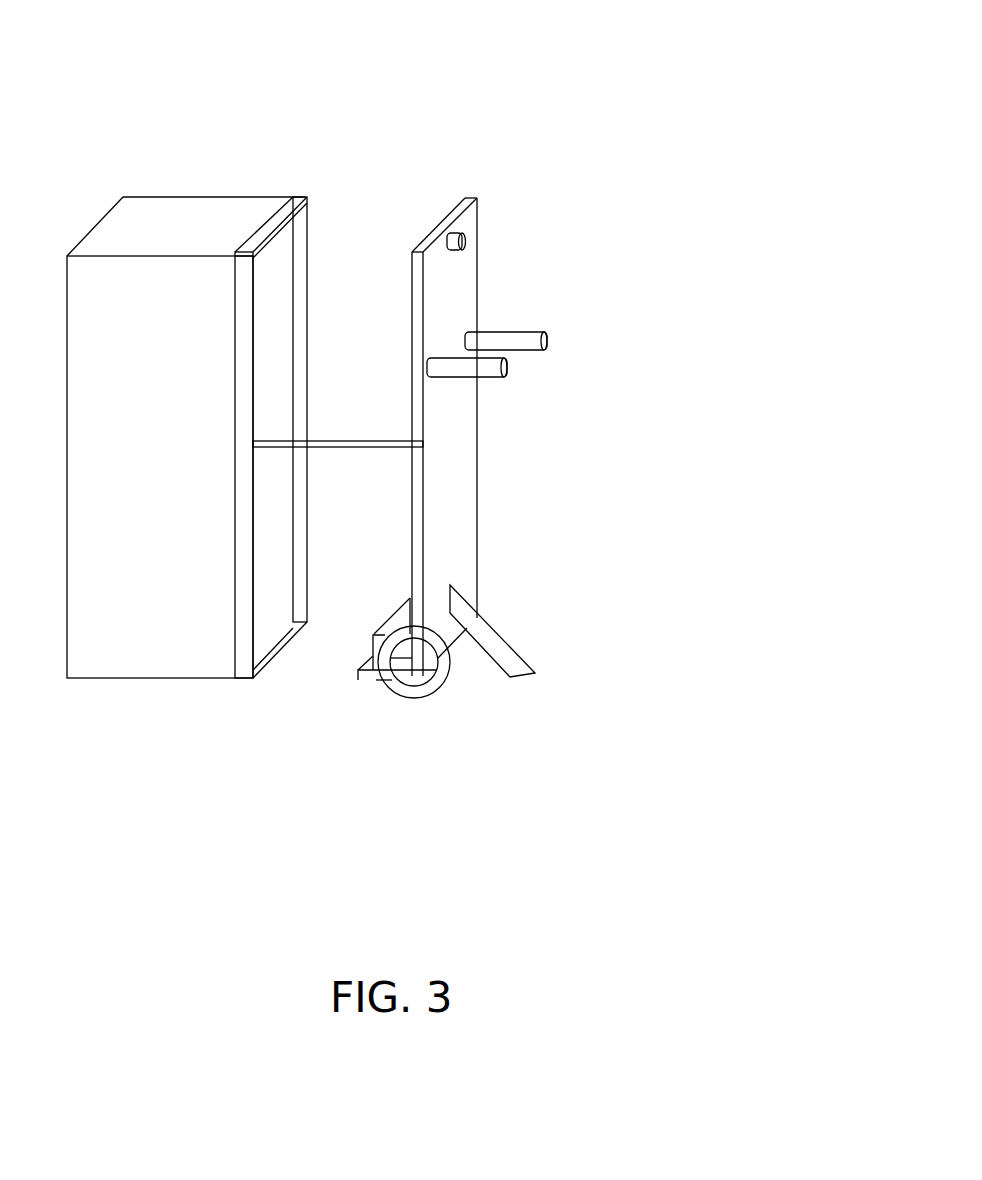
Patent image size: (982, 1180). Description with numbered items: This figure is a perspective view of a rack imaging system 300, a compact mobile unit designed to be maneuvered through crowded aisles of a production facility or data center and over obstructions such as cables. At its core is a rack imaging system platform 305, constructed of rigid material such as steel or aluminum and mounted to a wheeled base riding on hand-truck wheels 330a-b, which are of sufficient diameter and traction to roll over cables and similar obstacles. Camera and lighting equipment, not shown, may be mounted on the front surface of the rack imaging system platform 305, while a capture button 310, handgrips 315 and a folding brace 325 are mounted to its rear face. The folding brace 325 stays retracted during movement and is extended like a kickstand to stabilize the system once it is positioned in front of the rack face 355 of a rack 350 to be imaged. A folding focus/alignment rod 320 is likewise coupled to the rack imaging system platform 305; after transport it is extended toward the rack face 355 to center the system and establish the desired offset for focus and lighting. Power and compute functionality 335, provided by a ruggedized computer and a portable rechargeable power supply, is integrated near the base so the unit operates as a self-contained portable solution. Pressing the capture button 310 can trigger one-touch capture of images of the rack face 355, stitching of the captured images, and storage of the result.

The rack imaging system 300 is at (593, 53).
The rack imaging system platform 305 is at (443, 220).
The capture button 310 is at (468, 242).
The handgrips 315 is at (548, 340).
The folding focus/alignment rod 320 is at (427, 443).
The folding brace 325 is at (495, 632).
The hand-truck wheels 330a-b is at (450, 685).
The power and compute functionality 335 is at (417, 677).
The rack 350 is at (234, 437).
The rack face 355 is at (267, 267).